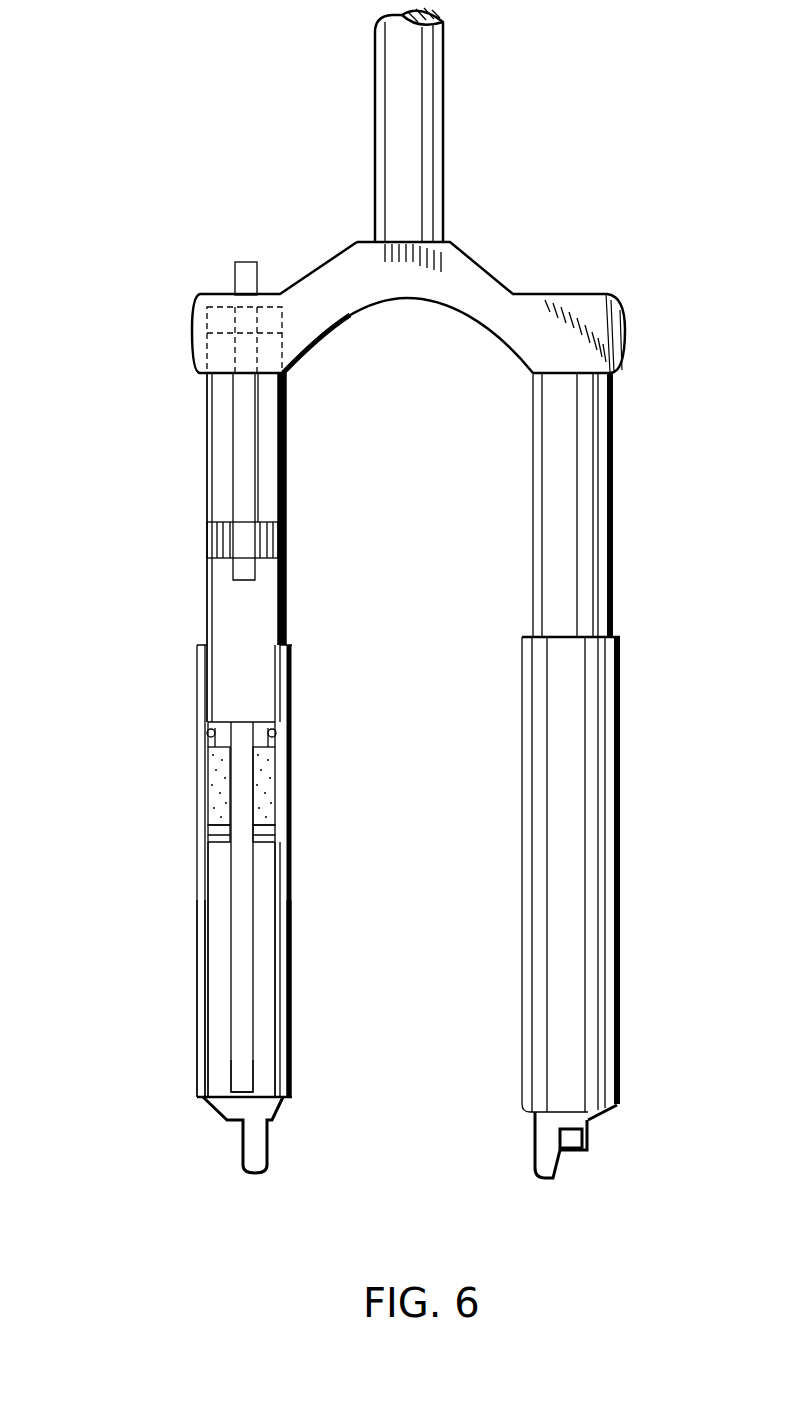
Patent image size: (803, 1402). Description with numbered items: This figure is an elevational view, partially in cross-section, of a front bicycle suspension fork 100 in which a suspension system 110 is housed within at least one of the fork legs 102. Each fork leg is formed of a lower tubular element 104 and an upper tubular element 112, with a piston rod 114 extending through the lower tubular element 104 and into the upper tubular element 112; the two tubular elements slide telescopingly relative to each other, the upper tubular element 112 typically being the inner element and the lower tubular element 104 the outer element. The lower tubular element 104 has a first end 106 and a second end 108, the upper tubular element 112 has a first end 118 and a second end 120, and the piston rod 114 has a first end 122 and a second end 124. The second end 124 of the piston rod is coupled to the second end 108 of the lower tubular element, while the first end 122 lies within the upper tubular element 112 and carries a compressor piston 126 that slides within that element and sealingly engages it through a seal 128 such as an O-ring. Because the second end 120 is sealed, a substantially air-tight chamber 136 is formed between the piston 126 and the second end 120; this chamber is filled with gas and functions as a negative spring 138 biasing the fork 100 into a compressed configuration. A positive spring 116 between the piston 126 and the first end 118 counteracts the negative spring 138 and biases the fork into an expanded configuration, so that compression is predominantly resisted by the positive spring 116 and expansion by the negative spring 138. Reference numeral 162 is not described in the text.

The front bicycle suspension fork 100 is at (243, 216).
The fork leg 102 is at (484, 611).
The lower tubular element 104 is at (306, 892).
The first end of lower tubular element 106 is at (197, 702).
The second end of lower tubular element 108 is at (195, 1018).
The suspension system 110 is at (168, 590).
The upper tubular element 112 is at (303, 488).
The piston rod 114 is at (253, 995).
The positive spring 116 is at (223, 468).
The first end of upper tubular element 118 is at (289, 404).
The second end of upper tubular element 120 is at (280, 815).
The first end of piston rod 122 is at (233, 783).
The second end of piston rod 124 is at (237, 1068).
The compressor piston 126 is at (208, 730).
The seal 128 is at (278, 736).
The chamber 136 is at (208, 818).
The negative spring 138 is at (208, 838).
The collar 162 is at (288, 548).